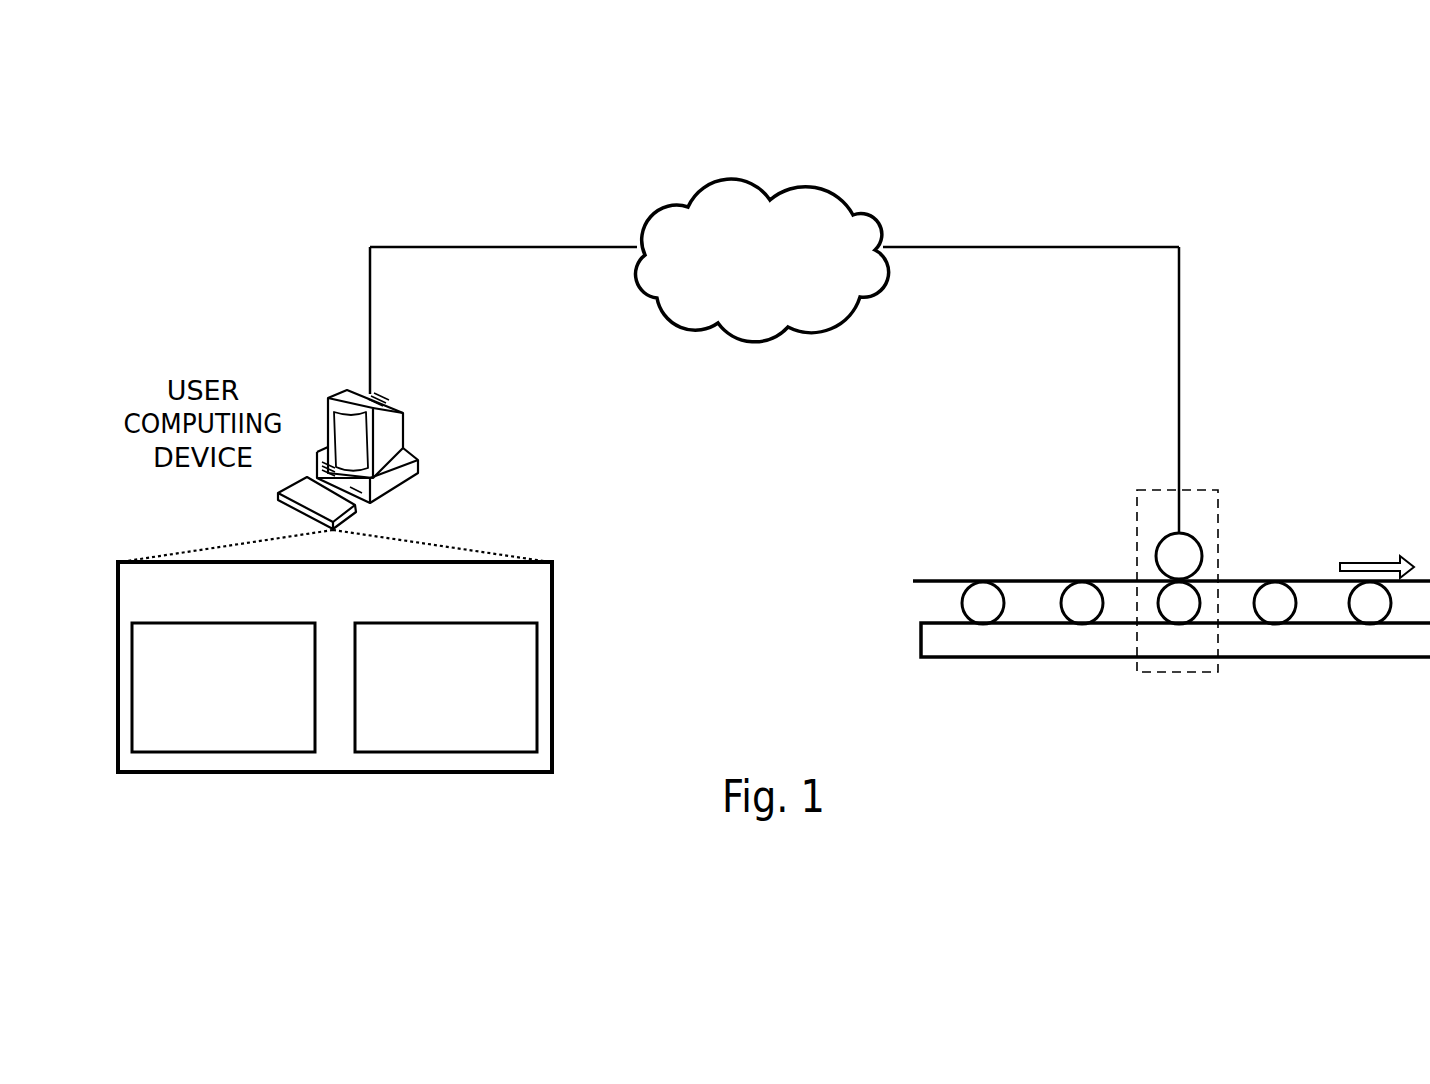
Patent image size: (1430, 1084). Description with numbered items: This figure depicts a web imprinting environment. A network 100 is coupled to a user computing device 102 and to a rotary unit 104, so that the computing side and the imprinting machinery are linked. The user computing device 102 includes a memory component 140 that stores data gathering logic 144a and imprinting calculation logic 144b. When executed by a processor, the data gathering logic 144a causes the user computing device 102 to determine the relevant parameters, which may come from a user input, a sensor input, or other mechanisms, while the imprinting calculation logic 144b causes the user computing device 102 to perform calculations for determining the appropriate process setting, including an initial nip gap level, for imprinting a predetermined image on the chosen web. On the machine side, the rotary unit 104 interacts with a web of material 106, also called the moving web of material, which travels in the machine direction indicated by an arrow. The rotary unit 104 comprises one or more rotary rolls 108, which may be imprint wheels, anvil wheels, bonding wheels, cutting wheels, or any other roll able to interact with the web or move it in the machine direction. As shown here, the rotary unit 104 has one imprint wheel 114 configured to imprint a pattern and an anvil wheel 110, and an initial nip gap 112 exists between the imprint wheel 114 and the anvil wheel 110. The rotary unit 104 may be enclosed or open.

The network 100 is at (880, 233).
The user computing device 102 is at (400, 414).
The rotary unit 104 is at (1220, 503).
The web of material 106 is at (913, 560).
The rotary rolls 108 is at (1163, 586).
The anvil wheel 110 is at (1172, 610).
The initial nip gap 112 is at (1199, 579).
The imprint wheel 114 is at (1200, 543).
The memory component 140 is at (335, 667).
The data gathering logic 144a is at (223, 687).
The imprinting calculation logic 144b is at (446, 687).